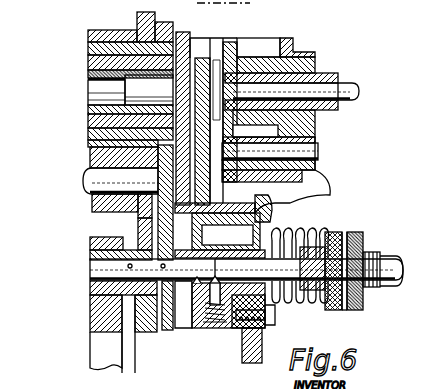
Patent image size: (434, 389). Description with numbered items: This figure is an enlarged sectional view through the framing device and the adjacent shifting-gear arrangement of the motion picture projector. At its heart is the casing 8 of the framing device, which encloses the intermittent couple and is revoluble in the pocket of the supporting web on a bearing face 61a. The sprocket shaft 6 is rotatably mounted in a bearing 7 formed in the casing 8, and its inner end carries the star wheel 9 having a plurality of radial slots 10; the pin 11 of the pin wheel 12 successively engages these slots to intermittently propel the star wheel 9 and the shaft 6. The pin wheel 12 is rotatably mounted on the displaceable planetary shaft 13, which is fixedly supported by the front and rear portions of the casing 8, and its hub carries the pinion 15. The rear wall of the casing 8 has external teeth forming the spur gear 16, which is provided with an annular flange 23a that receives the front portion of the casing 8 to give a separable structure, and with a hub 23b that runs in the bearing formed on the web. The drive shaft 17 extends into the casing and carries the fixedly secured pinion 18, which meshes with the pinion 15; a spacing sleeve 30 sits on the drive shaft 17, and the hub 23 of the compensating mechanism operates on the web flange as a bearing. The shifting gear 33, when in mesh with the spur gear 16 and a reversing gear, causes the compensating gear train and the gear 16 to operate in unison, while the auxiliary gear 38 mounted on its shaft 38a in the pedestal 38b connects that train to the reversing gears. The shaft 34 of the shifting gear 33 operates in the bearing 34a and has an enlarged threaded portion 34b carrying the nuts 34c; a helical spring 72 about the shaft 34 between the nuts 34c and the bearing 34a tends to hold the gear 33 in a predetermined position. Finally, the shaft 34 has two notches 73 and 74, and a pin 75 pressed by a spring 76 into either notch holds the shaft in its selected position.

The shaft 6 is at (349, 82).
The bearing 7 is at (303, 56).
The casing 8 is at (307, 193).
The star wheel 9 is at (216, 52).
The radial slots 10 is at (247, 40).
The pin 11 is at (296, 93).
The pin wheel 12 is at (270, 150).
The planetary shaft 13 is at (314, 147).
The pinion 15 is at (155, 150).
The spur gear 16 is at (160, 226).
The drive shaft 17 is at (88, 93).
The pinion 18 is at (188, 84).
The hub 23 is at (96, 30).
The annular flange 23a is at (310, 168).
The hub 23b is at (88, 61).
The spacing sleeve 30 is at (88, 73).
The shifting gear 33 is at (90, 250).
The shaft 34 is at (312, 246).
The bearing 34a is at (240, 320).
The threaded portion 34b is at (385, 252).
The nuts 34c is at (345, 304).
The auxiliary gear 38 is at (140, 328).
The shaft 38a is at (103, 273).
The pedestal 38b is at (98, 337).
The bearing face 61a is at (273, 232).
The helical spring 72 is at (322, 242).
The notch 73 is at (309, 269).
The notch 74 is at (152, 269).
The pin 75 is at (155, 300).
The spring 76 is at (186, 338).